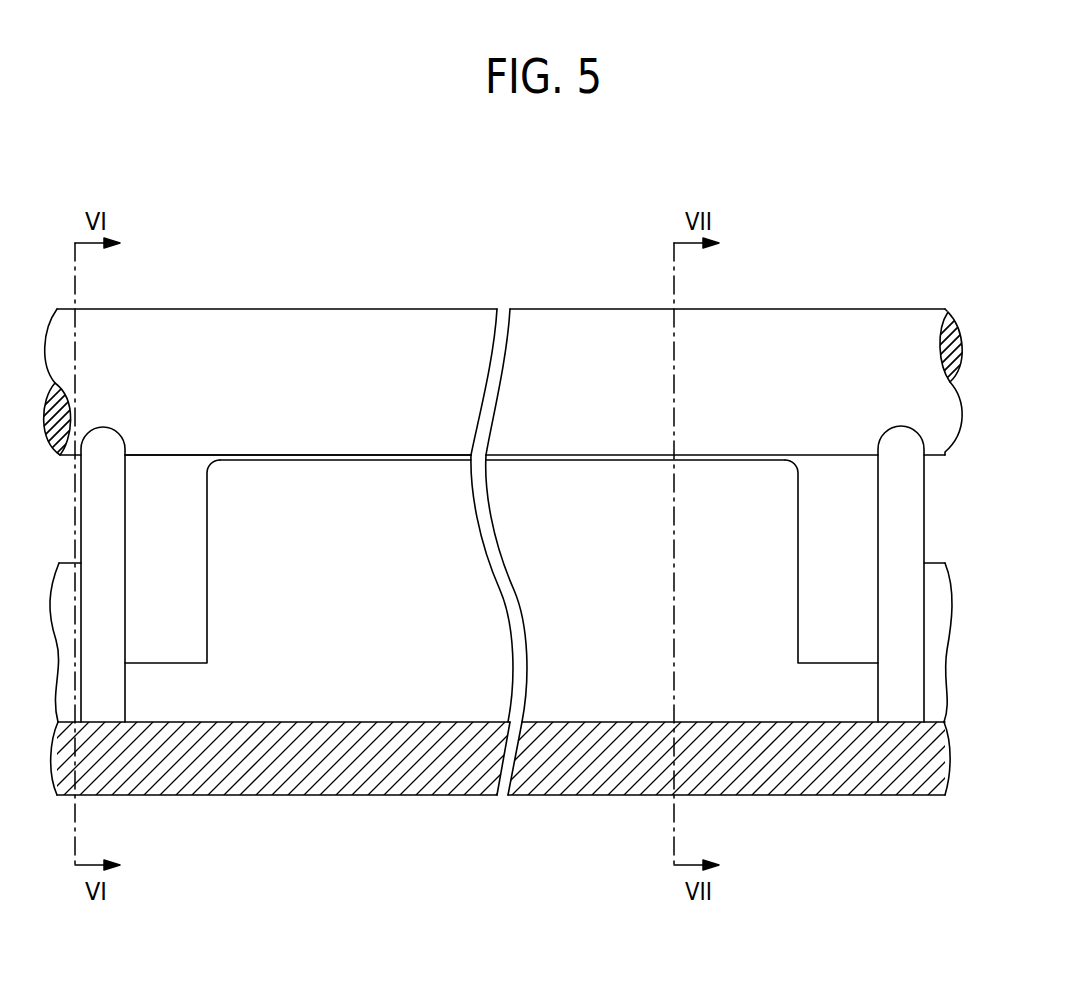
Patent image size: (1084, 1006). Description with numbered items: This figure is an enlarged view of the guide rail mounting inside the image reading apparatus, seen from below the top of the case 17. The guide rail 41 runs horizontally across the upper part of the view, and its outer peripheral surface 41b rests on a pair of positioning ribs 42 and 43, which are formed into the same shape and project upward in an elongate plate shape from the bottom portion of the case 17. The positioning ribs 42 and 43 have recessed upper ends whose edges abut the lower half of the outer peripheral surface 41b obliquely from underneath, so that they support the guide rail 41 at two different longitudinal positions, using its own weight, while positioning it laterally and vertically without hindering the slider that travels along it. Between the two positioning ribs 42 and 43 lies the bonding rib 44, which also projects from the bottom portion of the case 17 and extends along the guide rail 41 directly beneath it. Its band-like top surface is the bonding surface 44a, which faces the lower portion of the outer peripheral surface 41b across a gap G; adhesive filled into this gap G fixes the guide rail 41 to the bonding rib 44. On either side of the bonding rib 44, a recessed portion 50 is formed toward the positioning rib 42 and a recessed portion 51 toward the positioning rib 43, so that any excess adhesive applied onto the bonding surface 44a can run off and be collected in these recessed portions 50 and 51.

The guide rail 41 is at (356, 298).
The outer peripheral surface 41b is at (400, 340).
The positioning rib 42 is at (105, 447).
The positioning rib 43 is at (898, 442).
The bonding rib 44 is at (427, 565).
The bonding surface 44a is at (545, 457).
The recessed portion 50 is at (168, 642).
The recessed portion 51 is at (847, 645).
The gap G is at (345, 459).
The case 17 is at (740, 812).